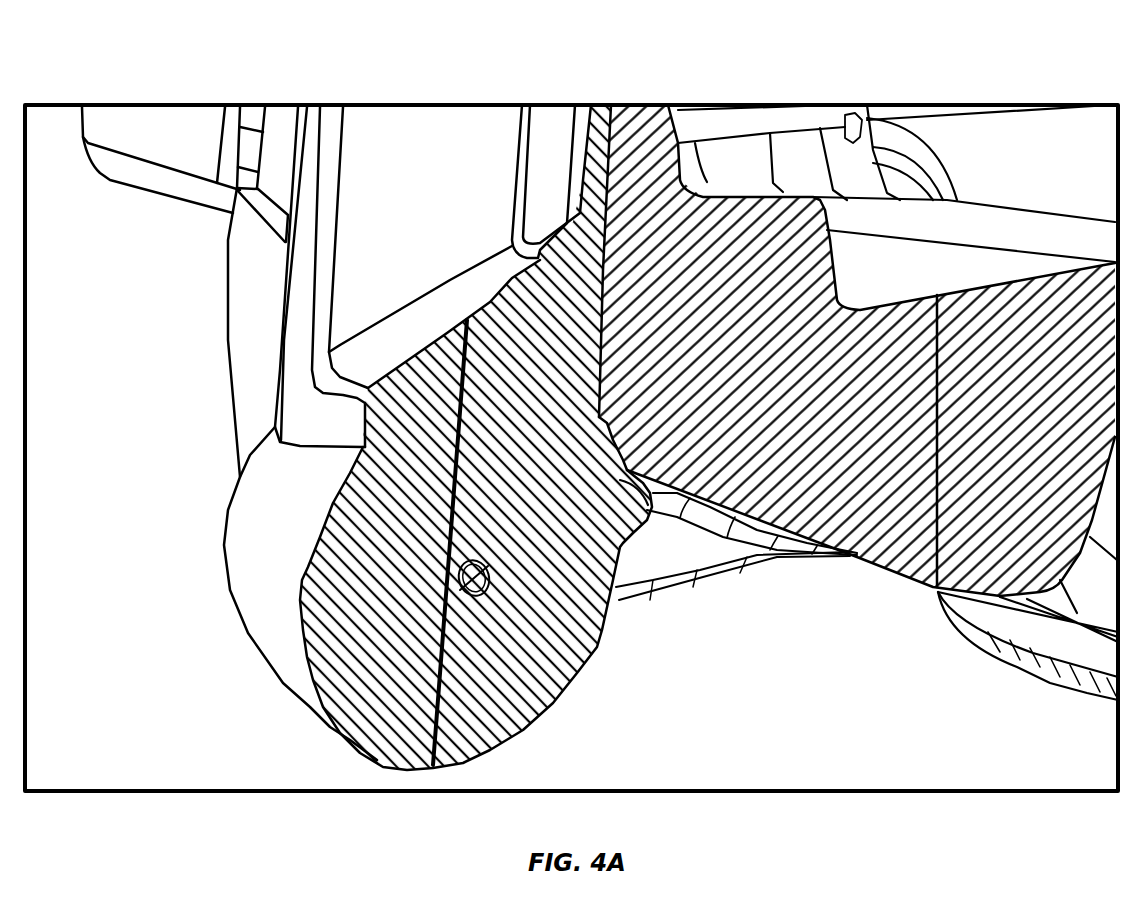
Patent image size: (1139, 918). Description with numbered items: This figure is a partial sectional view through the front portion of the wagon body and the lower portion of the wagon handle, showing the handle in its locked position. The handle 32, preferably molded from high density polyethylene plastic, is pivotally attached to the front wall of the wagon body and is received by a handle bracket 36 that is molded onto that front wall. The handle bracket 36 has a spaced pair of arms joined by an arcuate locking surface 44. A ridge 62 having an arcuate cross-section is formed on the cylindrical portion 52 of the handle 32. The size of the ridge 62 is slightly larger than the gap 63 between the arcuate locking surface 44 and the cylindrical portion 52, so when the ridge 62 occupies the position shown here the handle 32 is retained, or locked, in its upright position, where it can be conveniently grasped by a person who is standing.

The handle 32 is at (381, 98).
The handle bracket 36 is at (191, 438).
The arcuate locking surface 44 is at (655, 446).
The cylindrical portion 52 is at (540, 718).
The ridge 62 is at (650, 512).
The gap 63 is at (622, 413).